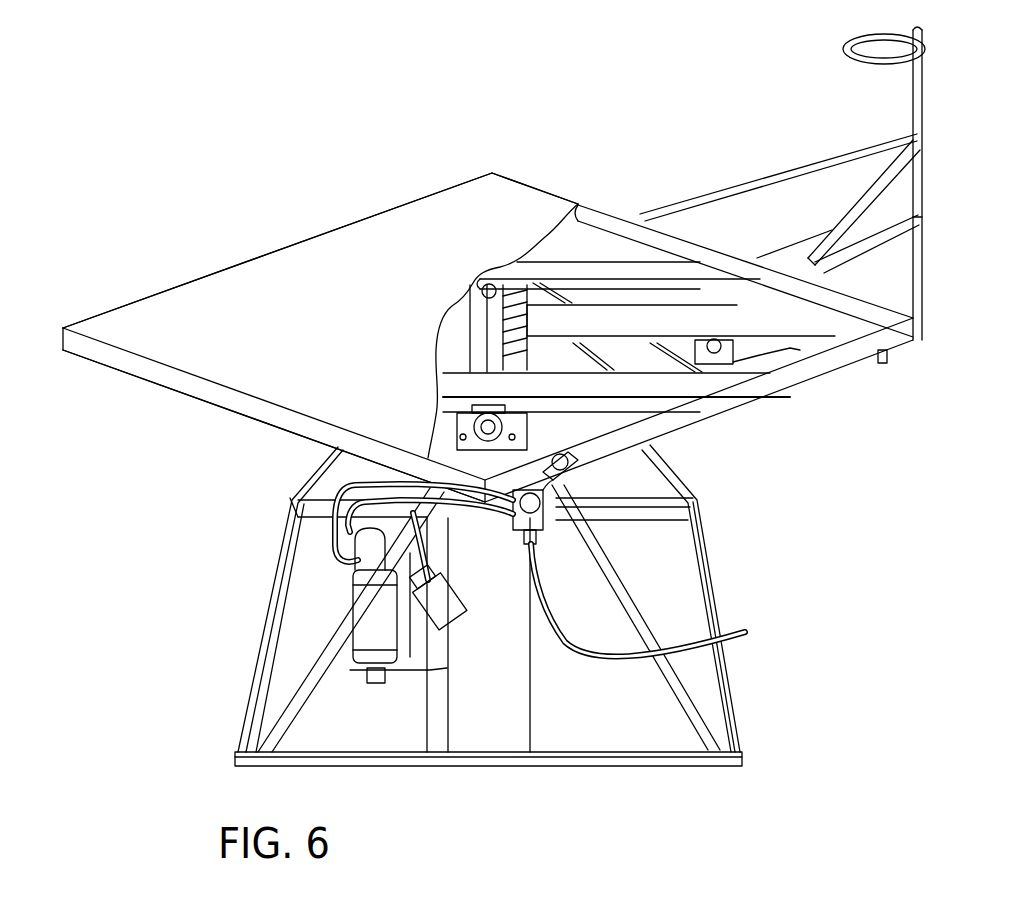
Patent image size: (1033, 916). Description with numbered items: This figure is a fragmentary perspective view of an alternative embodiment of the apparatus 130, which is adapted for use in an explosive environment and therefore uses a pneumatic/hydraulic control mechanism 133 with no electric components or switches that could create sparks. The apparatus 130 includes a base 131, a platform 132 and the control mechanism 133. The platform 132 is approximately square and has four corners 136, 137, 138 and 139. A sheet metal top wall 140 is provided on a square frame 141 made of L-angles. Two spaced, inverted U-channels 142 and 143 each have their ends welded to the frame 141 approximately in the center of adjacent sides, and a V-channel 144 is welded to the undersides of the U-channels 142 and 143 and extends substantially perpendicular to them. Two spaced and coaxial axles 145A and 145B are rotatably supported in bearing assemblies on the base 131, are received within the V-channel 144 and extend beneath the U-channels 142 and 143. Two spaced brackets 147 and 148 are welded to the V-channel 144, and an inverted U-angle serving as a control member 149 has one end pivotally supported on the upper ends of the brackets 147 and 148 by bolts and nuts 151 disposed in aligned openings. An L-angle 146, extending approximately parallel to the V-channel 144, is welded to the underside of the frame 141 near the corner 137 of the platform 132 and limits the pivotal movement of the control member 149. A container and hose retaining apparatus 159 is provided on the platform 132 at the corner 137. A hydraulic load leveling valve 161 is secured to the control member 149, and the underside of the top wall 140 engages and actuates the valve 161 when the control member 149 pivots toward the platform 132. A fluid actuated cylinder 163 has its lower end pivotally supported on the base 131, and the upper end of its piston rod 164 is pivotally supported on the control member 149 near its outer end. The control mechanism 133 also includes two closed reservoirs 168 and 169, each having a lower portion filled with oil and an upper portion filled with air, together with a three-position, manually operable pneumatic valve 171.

The apparatus 130 is at (192, 503).
The base 131 is at (212, 653).
The platform 132 is at (379, 205).
The control mechanism 133 is at (642, 490).
The corner 136 is at (66, 330).
The corner 137 is at (923, 342).
The corner 138 is at (430, 455).
The corner 139 is at (492, 172).
The top wall 140 is at (488, 337).
The frame 141 is at (612, 205).
The U-channel 142 is at (455, 378).
The U-channel 143 is at (570, 248).
The V-channel 144 is at (462, 325).
The axle 145A is at (452, 455).
The axle 145B is at (477, 290).
The L-angle 146 is at (883, 365).
The bracket 147 is at (470, 356).
The bracket 148 is at (495, 318).
The control member 149 is at (745, 322).
The bolts and nuts 151 is at (540, 348).
The container and hose retaining apparatus 159 is at (820, 136).
The hydraulic load leveling valve 161 is at (735, 340).
The fluid actuated cylinder 163 is at (556, 495).
The piston rod 164 is at (588, 470).
The reservoir 168 is at (333, 545).
The reservoir 169 is at (373, 625).
The pneumatic valve 171 is at (517, 535).